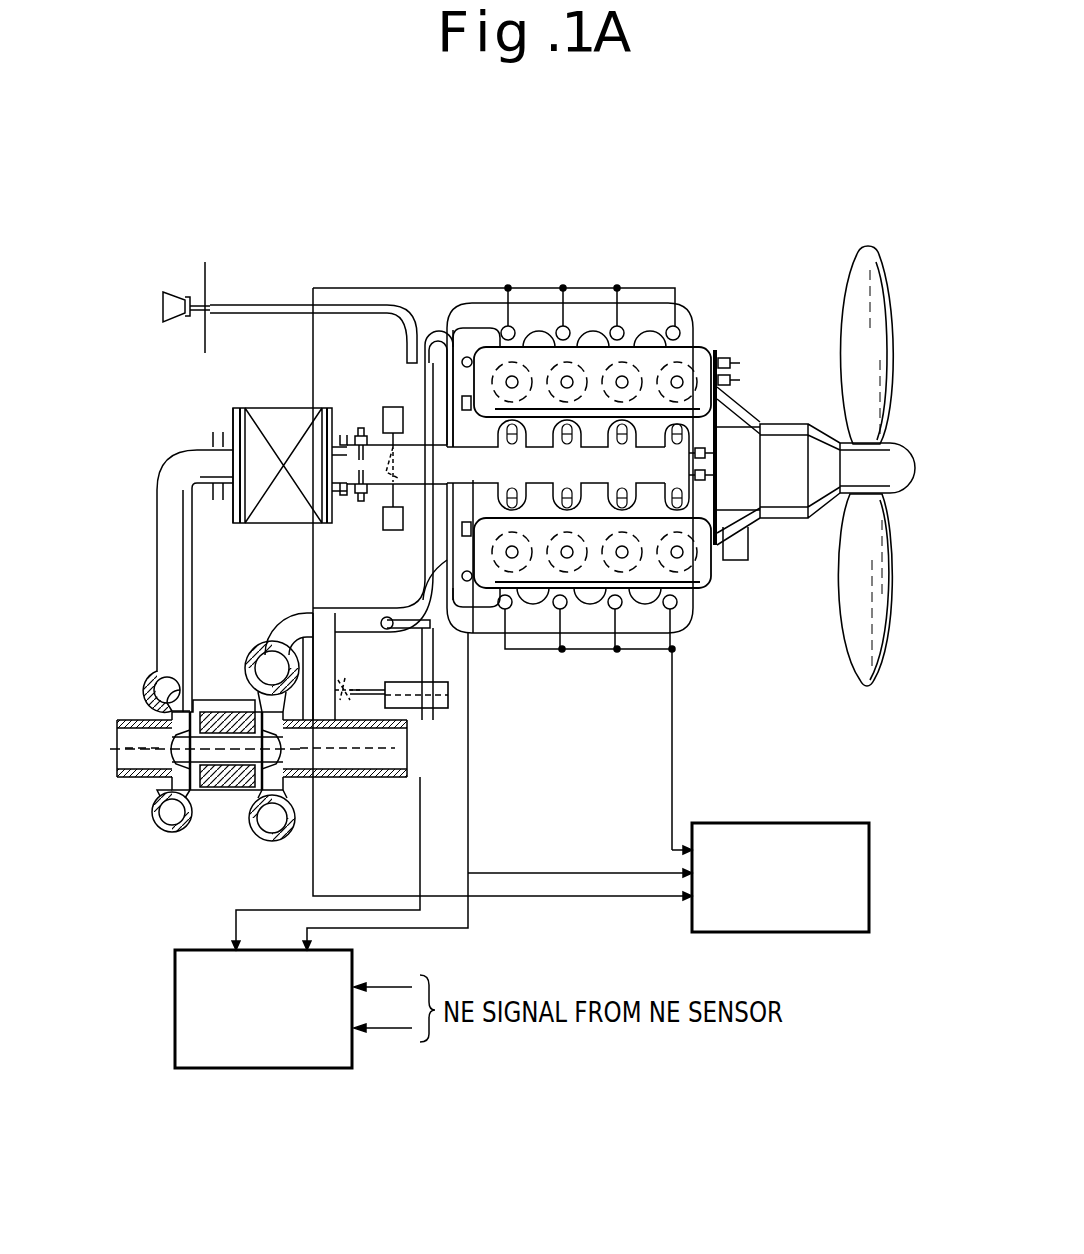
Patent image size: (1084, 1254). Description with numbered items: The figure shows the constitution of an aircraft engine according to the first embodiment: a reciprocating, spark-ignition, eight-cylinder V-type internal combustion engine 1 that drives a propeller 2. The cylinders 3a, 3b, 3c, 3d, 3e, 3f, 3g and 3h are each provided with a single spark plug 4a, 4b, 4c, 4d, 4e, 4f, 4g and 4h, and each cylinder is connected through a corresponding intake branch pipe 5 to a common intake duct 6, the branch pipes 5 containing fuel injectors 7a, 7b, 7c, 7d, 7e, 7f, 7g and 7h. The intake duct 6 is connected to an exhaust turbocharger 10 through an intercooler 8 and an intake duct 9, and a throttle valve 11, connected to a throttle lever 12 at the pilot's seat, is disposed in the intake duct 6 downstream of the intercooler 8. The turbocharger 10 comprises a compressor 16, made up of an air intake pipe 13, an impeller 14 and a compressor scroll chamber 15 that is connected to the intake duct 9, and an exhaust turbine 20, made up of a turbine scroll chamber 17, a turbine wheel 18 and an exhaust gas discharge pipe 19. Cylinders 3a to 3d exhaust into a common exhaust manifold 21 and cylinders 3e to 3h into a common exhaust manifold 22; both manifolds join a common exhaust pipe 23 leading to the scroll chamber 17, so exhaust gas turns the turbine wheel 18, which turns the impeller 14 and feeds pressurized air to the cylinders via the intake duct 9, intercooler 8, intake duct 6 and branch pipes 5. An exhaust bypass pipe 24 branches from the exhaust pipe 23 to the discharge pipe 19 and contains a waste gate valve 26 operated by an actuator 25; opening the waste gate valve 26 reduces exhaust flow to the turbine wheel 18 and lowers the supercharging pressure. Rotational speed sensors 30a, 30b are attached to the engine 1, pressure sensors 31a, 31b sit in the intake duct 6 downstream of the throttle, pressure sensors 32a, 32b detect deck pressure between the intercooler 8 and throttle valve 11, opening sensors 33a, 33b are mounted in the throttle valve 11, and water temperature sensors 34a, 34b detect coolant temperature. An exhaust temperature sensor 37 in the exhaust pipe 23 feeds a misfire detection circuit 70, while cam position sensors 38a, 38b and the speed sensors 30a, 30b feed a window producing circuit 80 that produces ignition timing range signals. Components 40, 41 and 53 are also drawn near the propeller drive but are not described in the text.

The internal combustion engine 1 is at (728, 345).
The propeller 2 is at (852, 290).
The cylinder 3a is at (690, 365).
The cylinder 3b is at (612, 365).
The cylinder 3c is at (557, 365).
The cylinder 3d is at (502, 365).
The cylinder 3e is at (700, 598).
The cylinder 3f is at (620, 585).
The cylinder 3g is at (565, 585).
The cylinder 3h is at (508, 585).
The spark plug 4a is at (672, 326).
The spark plug 4b is at (614, 326).
The spark plug 4c is at (561, 326).
The spark plug 4d is at (506, 326).
The spark plug 4e is at (672, 609).
The spark plug 4f is at (614, 609).
The spark plug 4g is at (558, 609).
The spark plug 4h is at (500, 609).
The intake branch pipes 5 is at (735, 408).
The intake duct 6 is at (742, 430).
The fuel injector 7a is at (680, 376).
The fuel injector 7b is at (622, 376).
The fuel injector 7c is at (567, 376).
The fuel injector 7d is at (512, 376).
The fuel injector 7e is at (680, 558).
The fuel injector 7f is at (622, 558).
The fuel injector 7g is at (567, 558).
The fuel injector 7h is at (512, 558).
The intercooler 8 is at (258, 523).
The intake duct 9 is at (157, 577).
The exhaust turbocharger 10 is at (226, 700).
The throttle valve 11 is at (376, 486).
The throttle lever 12 is at (160, 308).
The air intake pipe 13 is at (125, 762).
The impeller 14 is at (175, 760).
The compressor scroll chamber 15 is at (147, 690).
The compressor 16 is at (171, 832).
The turbine scroll chamber 17 is at (262, 652).
The turbine wheel 18 is at (283, 775).
The exhaust gas discharge pipe 19 is at (345, 765).
The exhaust turbine 20 is at (268, 842).
The exhaust manifold 21 is at (440, 328).
The exhaust manifold 22 is at (436, 635).
The common exhaust pipe 23 is at (300, 628).
The exhaust bypass pipe 24 is at (352, 680).
The actuator 25 is at (438, 710).
The waste gate valve 26 is at (373, 497).
The rotational speed sensor 30a is at (742, 363).
The rotational speed sensor 30b is at (742, 380).
The pressure sensor 31a is at (718, 453).
The pressure sensor 31b is at (718, 475).
The pressure sensor 32a is at (355, 435).
The pressure sensor 32b is at (357, 500).
The opening sensor 33a is at (390, 406).
The opening sensor 33b is at (393, 530).
The water temperature sensor 34a is at (395, 305).
The water temperature sensor 34b is at (457, 540).
The exhaust temperature sensor 37 is at (416, 677).
The cam position sensor 38a is at (466, 357).
The cam position sensor 38b is at (473, 633).
The propeller hub 40 is at (846, 494).
The reduction gear housing 41 is at (788, 526).
The sensor mount 53 is at (748, 562).
The misfire detection circuit 70 is at (850, 823).
The window producing circuit 80 is at (175, 958).